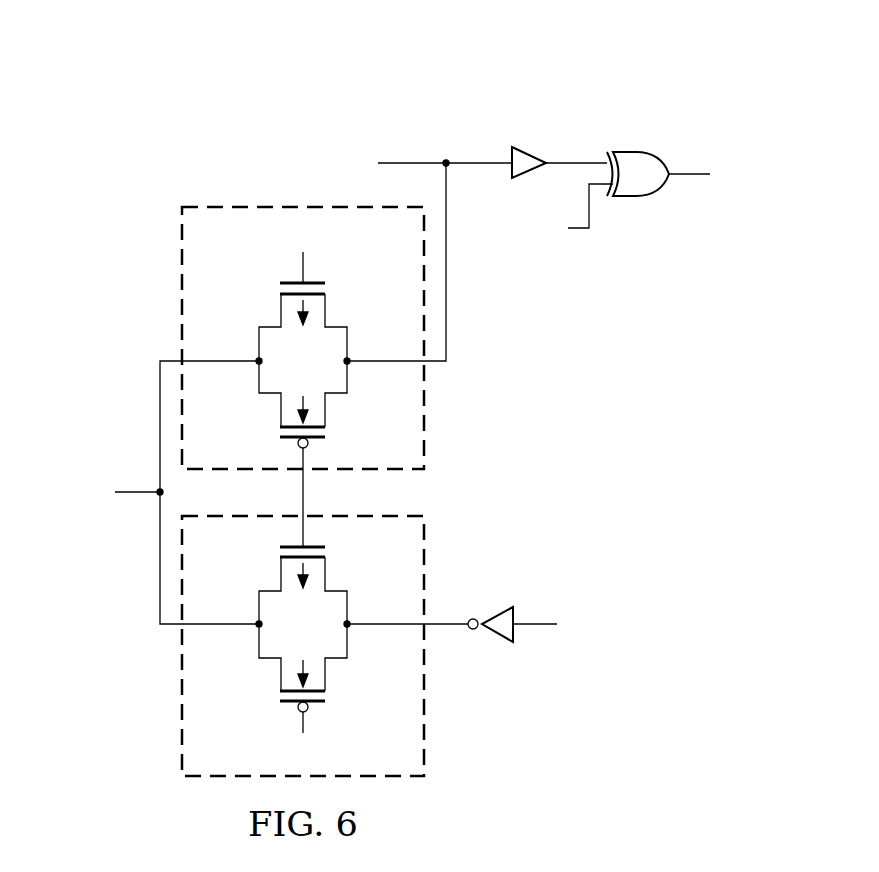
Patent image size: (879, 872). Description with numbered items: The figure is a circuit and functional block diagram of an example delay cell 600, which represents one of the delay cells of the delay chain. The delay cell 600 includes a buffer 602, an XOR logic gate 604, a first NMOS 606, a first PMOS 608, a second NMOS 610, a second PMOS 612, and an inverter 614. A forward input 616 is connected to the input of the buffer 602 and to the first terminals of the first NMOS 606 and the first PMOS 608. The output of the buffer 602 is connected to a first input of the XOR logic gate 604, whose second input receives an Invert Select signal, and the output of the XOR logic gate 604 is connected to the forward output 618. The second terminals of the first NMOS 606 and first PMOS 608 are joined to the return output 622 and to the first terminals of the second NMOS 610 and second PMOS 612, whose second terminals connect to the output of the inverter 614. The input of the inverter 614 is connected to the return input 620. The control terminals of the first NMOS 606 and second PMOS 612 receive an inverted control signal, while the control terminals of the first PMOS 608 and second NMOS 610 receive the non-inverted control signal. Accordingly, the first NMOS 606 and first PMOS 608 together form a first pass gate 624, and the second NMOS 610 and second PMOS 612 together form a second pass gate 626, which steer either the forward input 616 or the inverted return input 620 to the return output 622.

The delay cell 600 is at (280, 62).
The buffer 602 is at (530, 149).
The XOR logic gate 604 is at (633, 150).
The first NMOS 606 is at (280, 275).
The first PMOS 608 is at (290, 447).
The second NMOS 610 is at (280, 539).
The second PMOS 612 is at (290, 712).
The inverter 614 is at (490, 640).
The forward input 616 is at (412, 160).
The forward output 618 is at (688, 172).
The return input 620 is at (533, 630).
The return output 622 is at (138, 494).
The first pass gate 624 is at (182, 285).
The second pass gate 626 is at (182, 673).